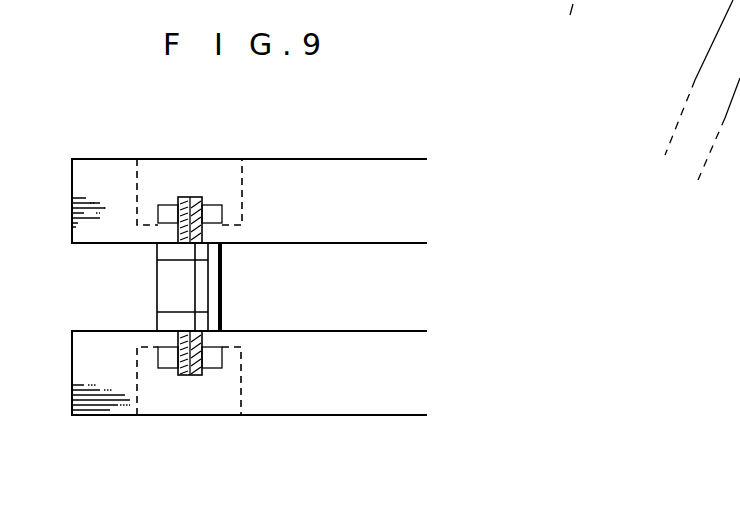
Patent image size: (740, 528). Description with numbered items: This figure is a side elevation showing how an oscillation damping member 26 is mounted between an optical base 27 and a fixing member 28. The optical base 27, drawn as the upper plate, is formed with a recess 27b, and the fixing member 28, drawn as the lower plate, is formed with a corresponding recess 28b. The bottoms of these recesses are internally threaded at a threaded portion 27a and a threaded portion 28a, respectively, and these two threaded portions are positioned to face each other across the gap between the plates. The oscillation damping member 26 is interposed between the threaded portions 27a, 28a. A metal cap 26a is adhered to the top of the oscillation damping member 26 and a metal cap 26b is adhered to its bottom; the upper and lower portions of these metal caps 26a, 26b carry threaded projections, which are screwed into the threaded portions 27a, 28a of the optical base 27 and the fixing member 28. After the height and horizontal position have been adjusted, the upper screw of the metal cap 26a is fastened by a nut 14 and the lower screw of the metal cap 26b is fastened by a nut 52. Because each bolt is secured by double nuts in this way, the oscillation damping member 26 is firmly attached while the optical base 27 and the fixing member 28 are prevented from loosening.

The optical base 27 is at (96, 168).
The threaded portion 27a is at (195, 228).
The recess 27b is at (147, 176).
The nut 14 is at (172, 210).
The oscillation damping member 26 is at (163, 283).
The metal cap 26a is at (222, 248).
The metal cap 26b is at (222, 320).
The fixing member 28 is at (112, 408).
The threaded portion 28a is at (200, 340).
The recess 28b is at (238, 398).
The nut 52 is at (170, 362).